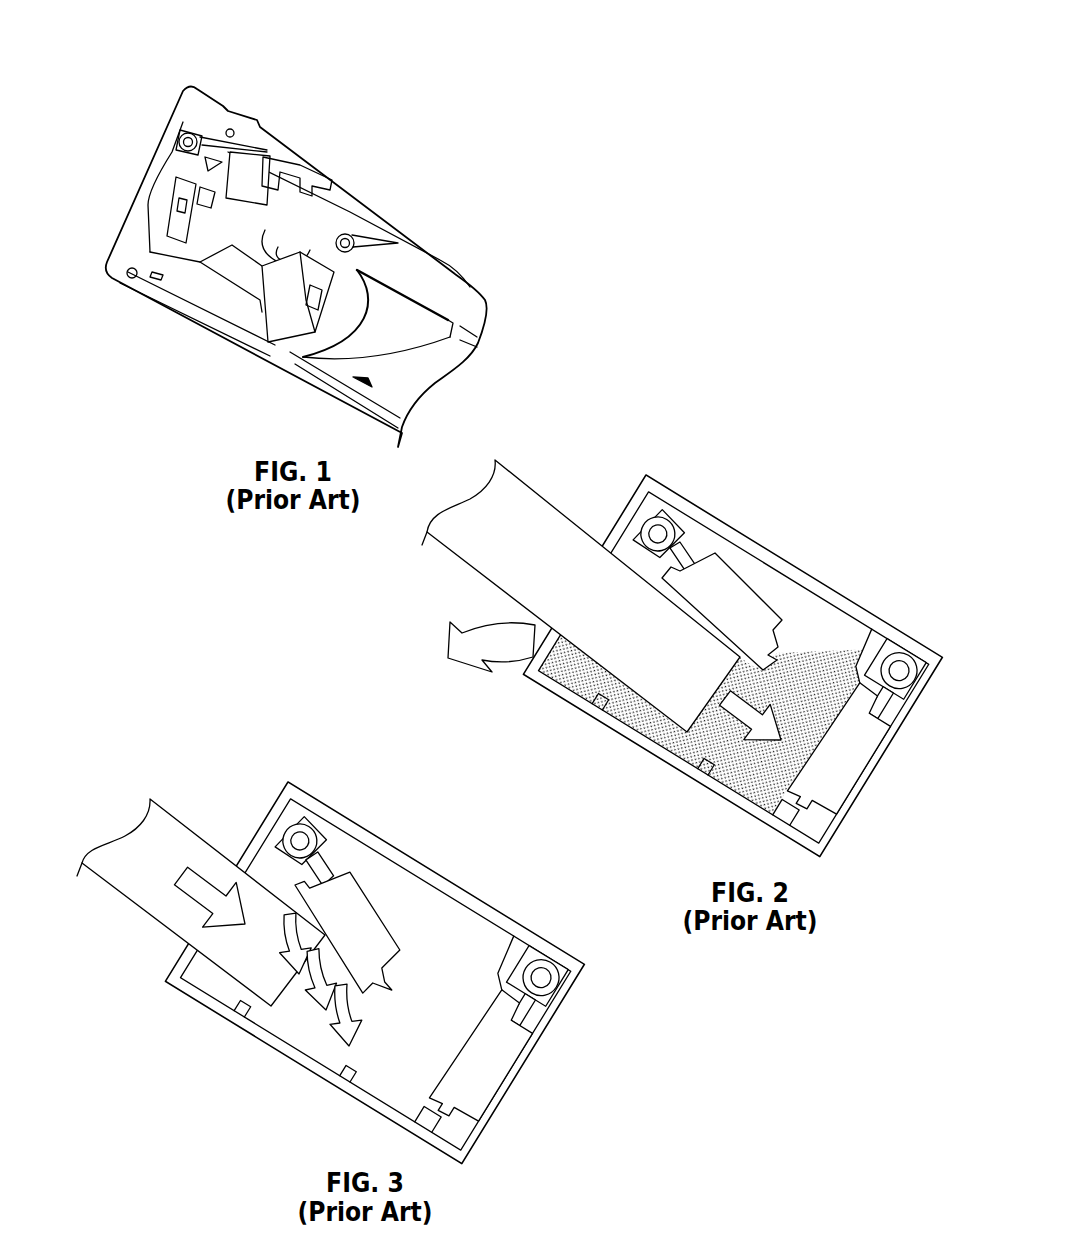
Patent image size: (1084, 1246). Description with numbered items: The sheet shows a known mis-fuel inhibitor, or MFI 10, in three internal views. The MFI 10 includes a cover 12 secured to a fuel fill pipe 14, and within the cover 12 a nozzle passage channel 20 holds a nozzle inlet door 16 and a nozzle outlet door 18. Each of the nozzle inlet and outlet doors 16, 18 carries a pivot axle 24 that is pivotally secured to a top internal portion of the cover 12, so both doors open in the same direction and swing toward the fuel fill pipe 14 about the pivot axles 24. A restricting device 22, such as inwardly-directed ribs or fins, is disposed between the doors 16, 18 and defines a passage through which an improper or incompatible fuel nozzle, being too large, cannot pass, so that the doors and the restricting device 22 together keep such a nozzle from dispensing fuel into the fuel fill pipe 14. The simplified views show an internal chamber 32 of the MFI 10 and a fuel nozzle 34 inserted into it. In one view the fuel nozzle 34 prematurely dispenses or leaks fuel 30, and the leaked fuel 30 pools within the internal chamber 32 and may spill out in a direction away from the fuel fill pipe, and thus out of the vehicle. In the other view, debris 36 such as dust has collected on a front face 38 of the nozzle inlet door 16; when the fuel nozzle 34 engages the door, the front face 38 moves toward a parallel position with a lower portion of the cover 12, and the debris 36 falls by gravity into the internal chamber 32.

In FIG. 1, the MFI 10 is at (294, 231).
In FIG. 2, the MFI 10 is at (682, 627).
In FIG. 3, the MFI 10 is at (330, 925).
In FIG. 1, the cover 12 is at (363, 211).
In FIG. 2, the cover 12 is at (817, 582).
In FIG. 3, the cover 12 is at (442, 876).
In FIG. 1, the fuel fill pipe 14 is at (463, 313).
In FIG. 1, the nozzle inlet door 16 is at (163, 208).
In FIG. 2, the nozzle inlet door 16 is at (718, 582).
In FIG. 3, the nozzle inlet door 16 is at (352, 908).
In FIG. 1, the nozzle outlet door 18 is at (285, 307).
In FIG. 2, the nozzle outlet door 18 is at (857, 747).
In FIG. 3, the nozzle outlet door 18 is at (486, 1063).
In FIG. 1, the nozzle passage channel 20 is at (200, 263).
In FIG. 1, the restricting device 22 is at (262, 212).
In FIG. 1, the pivot axle 24 is at (212, 137).
In FIG. 2, the leaked fuel 30 is at (830, 667).
In FIG. 2, the internal chamber 32 is at (797, 610).
In FIG. 3, the internal chamber 32 is at (460, 950).
In FIG. 2, the fuel nozzle 34 is at (526, 520).
In FIG. 3, the fuel nozzle 34 is at (135, 885).
In FIG. 3, the debris 36 is at (313, 992).
In FIG. 3, the front face 38 is at (300, 908).